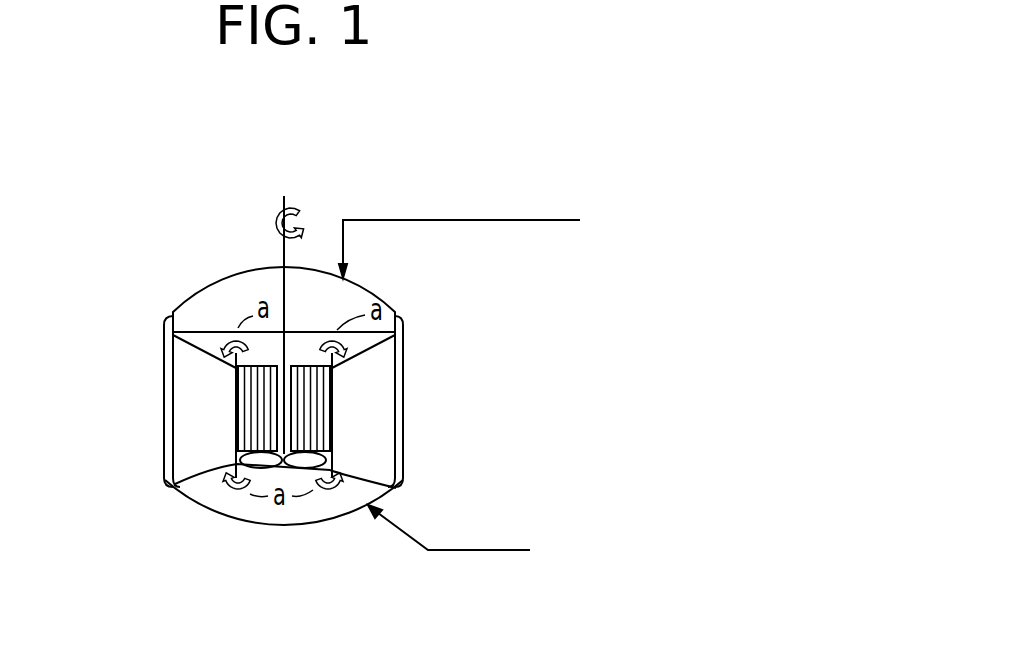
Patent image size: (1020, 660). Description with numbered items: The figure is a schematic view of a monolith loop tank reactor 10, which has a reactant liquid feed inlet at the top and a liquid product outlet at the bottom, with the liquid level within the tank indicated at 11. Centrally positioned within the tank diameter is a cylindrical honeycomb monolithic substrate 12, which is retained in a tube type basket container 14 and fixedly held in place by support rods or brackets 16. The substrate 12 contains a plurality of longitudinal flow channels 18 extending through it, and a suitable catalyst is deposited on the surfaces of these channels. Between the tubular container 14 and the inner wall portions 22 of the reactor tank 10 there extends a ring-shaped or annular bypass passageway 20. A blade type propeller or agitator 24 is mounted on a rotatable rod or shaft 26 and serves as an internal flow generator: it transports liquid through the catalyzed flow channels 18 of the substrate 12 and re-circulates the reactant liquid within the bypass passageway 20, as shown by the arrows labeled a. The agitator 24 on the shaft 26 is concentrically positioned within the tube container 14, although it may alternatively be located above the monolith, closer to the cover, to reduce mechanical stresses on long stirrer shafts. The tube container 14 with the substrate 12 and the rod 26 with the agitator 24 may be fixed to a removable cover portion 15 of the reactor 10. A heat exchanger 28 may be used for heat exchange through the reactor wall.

The monolith loop tank reactor 10 is at (164, 284).
The liquid level 11 is at (184, 330).
The cylindrical honeycomb monolithic substrate 12 is at (300, 365).
The tube type basket container 14 is at (335, 397).
The removable cover portion 15 is at (240, 272).
The support rods or brackets 16 is at (200, 357).
The longitudinal flow channels 18 is at (237, 413).
The annular bypass passageway 20 is at (192, 405).
The inner wall portions 22 is at (397, 426).
The blade type propeller or agitator 24 is at (175, 484).
The rotatable rod or shaft 26 is at (288, 203).
The heat exchanger 28 is at (335, 369).